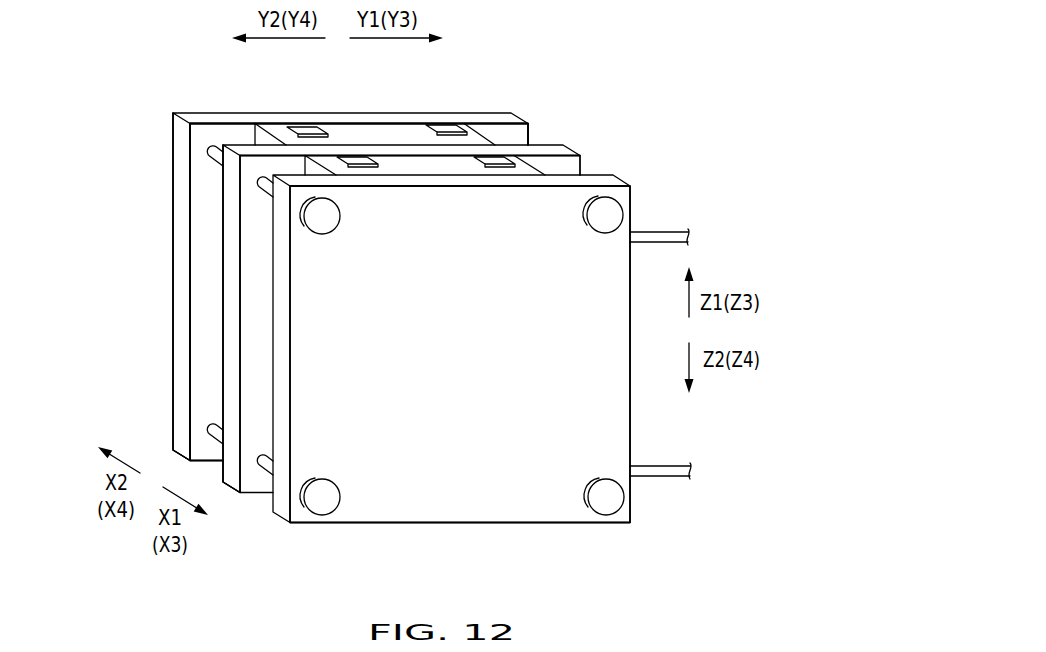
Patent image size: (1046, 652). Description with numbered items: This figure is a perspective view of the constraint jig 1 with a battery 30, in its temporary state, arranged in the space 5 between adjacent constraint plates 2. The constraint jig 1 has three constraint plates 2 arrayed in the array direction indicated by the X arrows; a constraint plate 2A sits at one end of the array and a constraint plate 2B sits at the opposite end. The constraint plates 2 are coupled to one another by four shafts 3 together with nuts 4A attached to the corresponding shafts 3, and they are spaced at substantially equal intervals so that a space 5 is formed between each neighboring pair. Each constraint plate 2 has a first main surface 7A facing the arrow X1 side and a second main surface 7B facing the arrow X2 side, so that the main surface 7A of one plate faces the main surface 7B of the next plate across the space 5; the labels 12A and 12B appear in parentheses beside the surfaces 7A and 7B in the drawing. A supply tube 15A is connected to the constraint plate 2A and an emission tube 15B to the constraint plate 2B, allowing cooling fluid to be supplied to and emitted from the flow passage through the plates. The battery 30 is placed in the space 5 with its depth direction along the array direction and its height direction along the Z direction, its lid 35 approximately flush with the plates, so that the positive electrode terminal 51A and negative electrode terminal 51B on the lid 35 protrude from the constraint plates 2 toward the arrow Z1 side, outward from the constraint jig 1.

The constraint jig 1 is at (688, 107).
The constraint plate 2 is at (562, 143).
The constraint plate 2A is at (578, 373).
The constraint plate 2B is at (208, 290).
The shaft 3 is at (267, 470).
The nut 4A is at (607, 502).
The space 5 is at (285, 168).
The first main surface 7A is at (453, 497).
The second main surface 7B is at (268, 382).
The first separator plate 12A is at (453, 497).
The second separator plate 12B is at (172, 158).
The supply tube 15A is at (657, 232).
The emission tube 15B is at (665, 478).
The battery 30 is at (432, 170).
The lid 35 is at (402, 165).
The positive electrode terminal 51A is at (495, 162).
The negative electrode terminal 51B is at (365, 168).